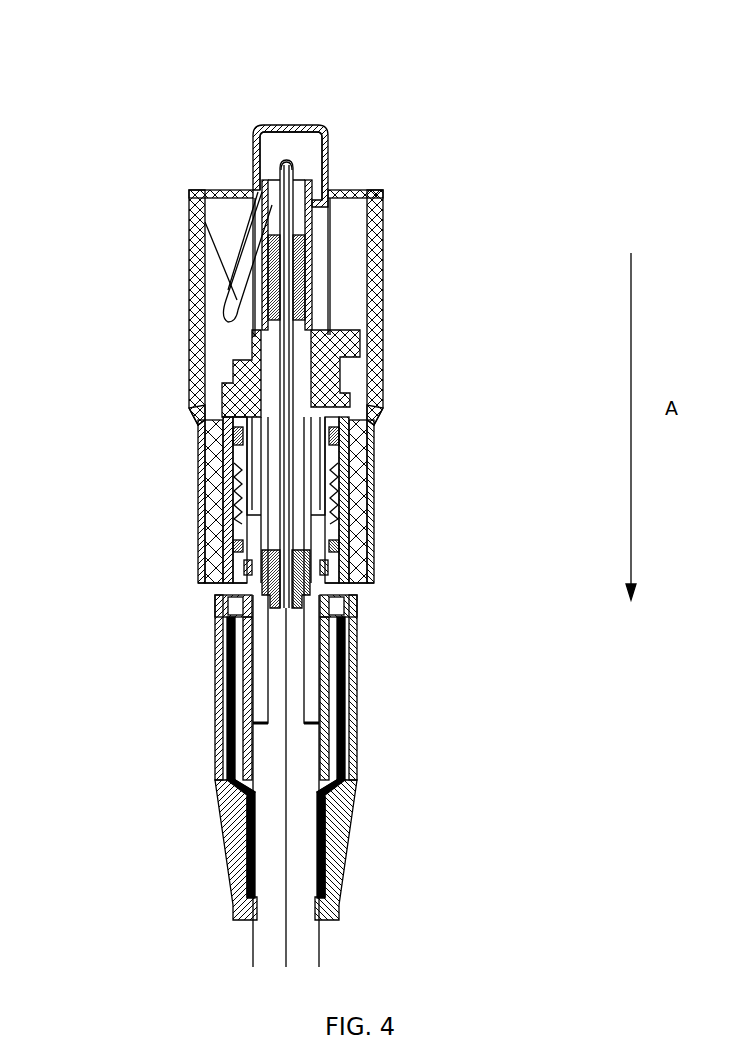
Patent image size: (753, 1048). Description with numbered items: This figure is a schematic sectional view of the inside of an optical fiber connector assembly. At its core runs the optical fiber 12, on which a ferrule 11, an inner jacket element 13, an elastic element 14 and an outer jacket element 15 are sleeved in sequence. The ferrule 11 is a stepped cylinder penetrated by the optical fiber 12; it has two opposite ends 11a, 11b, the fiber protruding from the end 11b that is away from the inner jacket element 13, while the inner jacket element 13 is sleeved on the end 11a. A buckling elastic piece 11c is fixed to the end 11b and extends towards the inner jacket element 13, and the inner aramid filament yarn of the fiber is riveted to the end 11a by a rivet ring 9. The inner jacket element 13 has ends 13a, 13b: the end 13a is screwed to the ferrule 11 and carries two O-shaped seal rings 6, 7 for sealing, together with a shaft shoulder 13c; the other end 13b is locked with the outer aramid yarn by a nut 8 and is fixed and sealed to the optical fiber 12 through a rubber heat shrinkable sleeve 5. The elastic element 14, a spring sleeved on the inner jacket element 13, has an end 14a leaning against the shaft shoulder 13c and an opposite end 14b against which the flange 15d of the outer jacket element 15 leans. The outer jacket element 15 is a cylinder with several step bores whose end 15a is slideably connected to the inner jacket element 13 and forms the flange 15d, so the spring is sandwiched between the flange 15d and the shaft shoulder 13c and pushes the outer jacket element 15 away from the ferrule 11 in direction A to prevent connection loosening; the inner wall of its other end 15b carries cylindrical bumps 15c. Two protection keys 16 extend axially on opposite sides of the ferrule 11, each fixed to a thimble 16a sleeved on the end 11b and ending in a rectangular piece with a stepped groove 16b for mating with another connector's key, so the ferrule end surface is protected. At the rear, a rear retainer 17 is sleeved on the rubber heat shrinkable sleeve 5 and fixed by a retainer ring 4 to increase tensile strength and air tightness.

The retainer ring 4 is at (345, 608).
The rubber heat shrinkable sleeve 5 is at (350, 740).
The O-shaped seal ring 6 is at (233, 437).
The O-shaped seal ring 7 is at (240, 552).
The nut 8 is at (230, 693).
The rivet ring 9 is at (235, 530).
The ferrule 11 is at (308, 228).
The end of the ferrule 11a is at (262, 430).
The end of the ferrule 11b is at (278, 158).
The buckling elastic piece 11c is at (235, 300).
The optical fiber 12 is at (290, 340).
The inner jacket element 13 is at (365, 540).
The end of the inner jacket element 13a is at (240, 480).
The end of the inner jacket element 13b is at (222, 655).
The shaft shoulder 13c is at (343, 452).
The elastic element 14 is at (350, 495).
The end of the elastic element 14a is at (350, 470).
The end of the elastic element 14b is at (345, 525).
The outer jacket element 15 is at (378, 392).
The end of the outer jacket element 15a is at (337, 584).
The end of the outer jacket element 15b is at (383, 235).
The bump 15c is at (240, 255).
The flange 15d is at (340, 565).
The protection key 16 is at (328, 167).
The thimble 16a is at (197, 412).
The stepped groove 16b is at (292, 142).
The rear retainer 17 is at (350, 825).